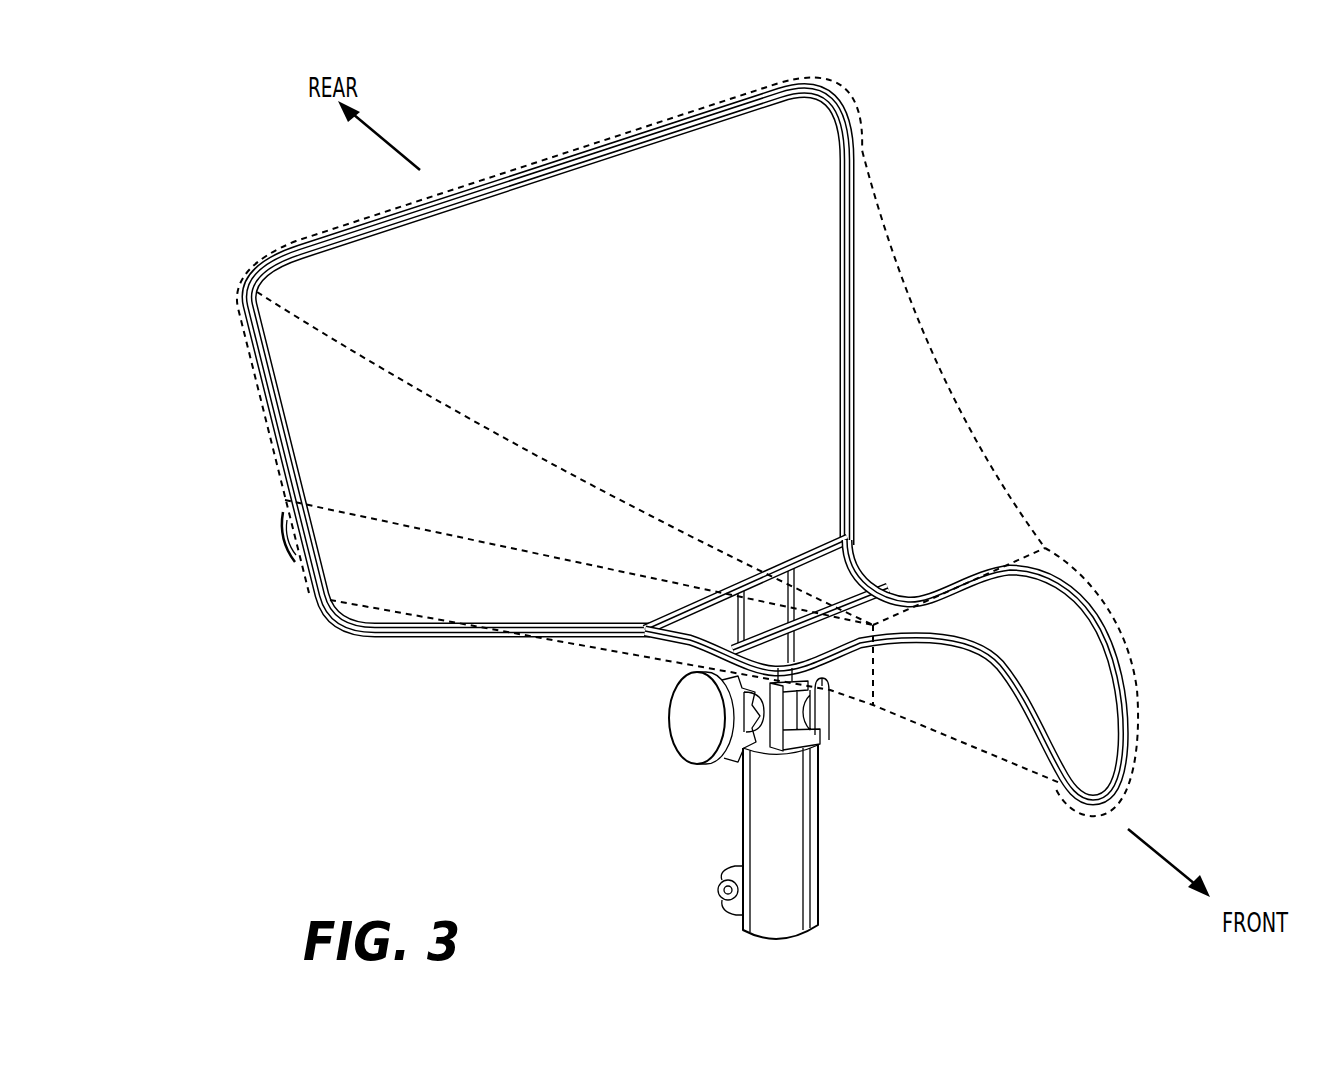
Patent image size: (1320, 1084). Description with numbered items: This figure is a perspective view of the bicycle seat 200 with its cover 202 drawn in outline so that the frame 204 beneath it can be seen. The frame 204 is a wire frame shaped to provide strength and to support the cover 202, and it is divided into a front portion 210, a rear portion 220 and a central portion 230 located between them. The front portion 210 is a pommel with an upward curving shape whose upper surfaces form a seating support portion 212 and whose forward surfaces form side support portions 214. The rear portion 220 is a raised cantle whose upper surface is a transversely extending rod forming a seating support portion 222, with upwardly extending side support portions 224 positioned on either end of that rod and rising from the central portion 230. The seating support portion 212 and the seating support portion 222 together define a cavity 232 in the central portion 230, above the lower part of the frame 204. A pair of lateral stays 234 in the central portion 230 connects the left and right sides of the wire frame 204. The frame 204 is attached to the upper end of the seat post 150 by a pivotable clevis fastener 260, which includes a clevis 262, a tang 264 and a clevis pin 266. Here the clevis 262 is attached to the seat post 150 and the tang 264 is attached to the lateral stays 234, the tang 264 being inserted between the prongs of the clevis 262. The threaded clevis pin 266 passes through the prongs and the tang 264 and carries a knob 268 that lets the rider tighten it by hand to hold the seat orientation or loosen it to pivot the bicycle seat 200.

The seat post 150 is at (797, 917).
The bicycle seat 200 is at (522, 116).
The cover 202 is at (925, 305).
The frame 204 is at (440, 633).
The front portion 210 is at (916, 673).
The seating support portion 212 is at (1108, 622).
The side support portions 214 is at (1124, 758).
The rear portion 220 is at (557, 388).
The seating support portion 222 is at (640, 124).
The side support portions 224 is at (855, 217).
The central portion 230 is at (822, 656).
The cavity 232 is at (958, 498).
The lateral stays 234 is at (866, 582).
The clevis fastener 260 is at (784, 745).
The clevis 262 is at (787, 745).
The tang 264 is at (808, 718).
The clevis pin 266 is at (757, 727).
The knob 268 is at (693, 740).